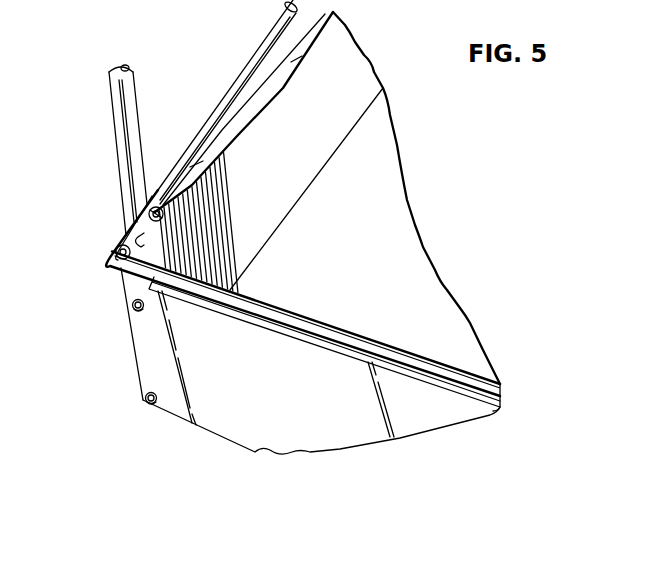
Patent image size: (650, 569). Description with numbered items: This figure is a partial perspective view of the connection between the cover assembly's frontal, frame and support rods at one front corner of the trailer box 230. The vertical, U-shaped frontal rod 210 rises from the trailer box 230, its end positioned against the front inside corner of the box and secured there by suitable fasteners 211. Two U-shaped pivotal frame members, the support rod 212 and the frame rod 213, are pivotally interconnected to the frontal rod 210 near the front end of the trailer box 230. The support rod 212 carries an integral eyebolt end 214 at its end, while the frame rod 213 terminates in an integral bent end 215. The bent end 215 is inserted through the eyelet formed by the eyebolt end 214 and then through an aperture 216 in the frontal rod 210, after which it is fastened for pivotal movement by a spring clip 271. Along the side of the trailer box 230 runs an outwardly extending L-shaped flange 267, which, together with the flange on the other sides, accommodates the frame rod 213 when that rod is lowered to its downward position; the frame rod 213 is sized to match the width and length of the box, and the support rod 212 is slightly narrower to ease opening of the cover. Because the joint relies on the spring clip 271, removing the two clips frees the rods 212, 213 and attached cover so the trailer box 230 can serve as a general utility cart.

The frontal rod 210 is at (122, 120).
The fasteners 211 is at (132, 308).
The support rod 212 is at (240, 70).
The frame rod 213 is at (293, 318).
The eyebolt end 214 is at (137, 250).
The bent end 215 is at (152, 207).
The aperture 216 is at (140, 238).
The trailer box 230 is at (270, 433).
The L-shaped flange 267 is at (320, 343).
The spring clip 271 is at (160, 220).